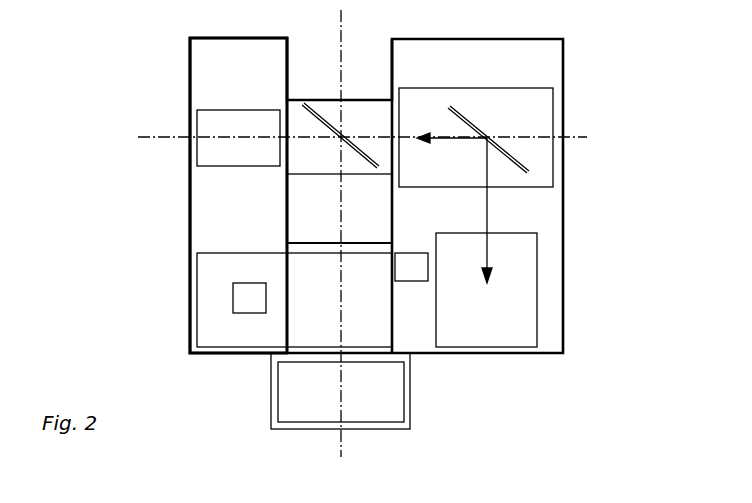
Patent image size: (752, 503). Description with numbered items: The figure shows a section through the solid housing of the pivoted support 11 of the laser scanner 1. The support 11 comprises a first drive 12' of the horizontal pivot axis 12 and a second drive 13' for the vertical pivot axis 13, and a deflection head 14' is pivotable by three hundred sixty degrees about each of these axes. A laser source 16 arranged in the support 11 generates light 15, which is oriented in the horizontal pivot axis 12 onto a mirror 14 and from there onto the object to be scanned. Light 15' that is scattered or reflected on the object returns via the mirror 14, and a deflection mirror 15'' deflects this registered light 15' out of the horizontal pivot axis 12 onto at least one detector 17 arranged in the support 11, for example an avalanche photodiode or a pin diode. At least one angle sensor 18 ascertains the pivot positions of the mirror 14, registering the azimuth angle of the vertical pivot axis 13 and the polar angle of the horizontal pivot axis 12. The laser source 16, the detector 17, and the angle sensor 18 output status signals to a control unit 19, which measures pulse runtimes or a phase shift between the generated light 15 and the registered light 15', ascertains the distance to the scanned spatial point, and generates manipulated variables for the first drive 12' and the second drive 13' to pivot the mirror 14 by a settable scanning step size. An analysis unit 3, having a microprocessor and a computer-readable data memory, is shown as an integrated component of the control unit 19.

The laser scanner 1 is at (244, 215).
The analysis unit 3 is at (242, 303).
The support 11 is at (563, 258).
The horizontal pivot axis 12 is at (182, 195).
The first drive 12' is at (201, 157).
The vertical pivot axis 13 is at (333, 417).
The second drive 13' is at (303, 393).
The mirror 14 is at (340, 99).
The deflection head 14' is at (339, 102).
The light 15 is at (452, 99).
The registered light 15' is at (550, 210).
The deflection mirror 15'' is at (488, 114).
The laser source 16 is at (532, 110).
The detector 17 is at (527, 315).
The angle sensor 18 is at (412, 265).
The control unit 19 is at (208, 287).